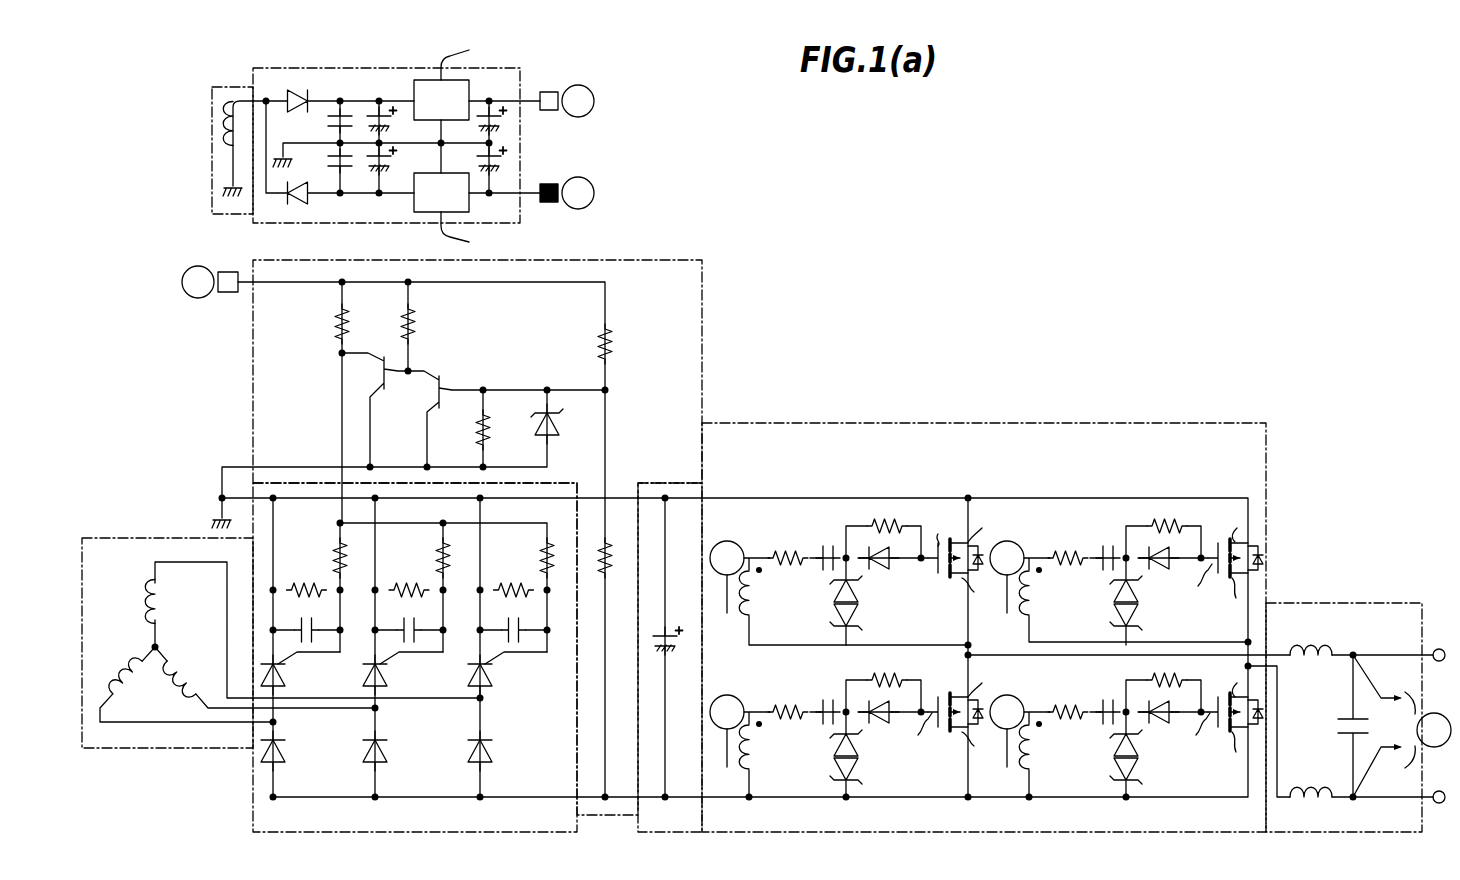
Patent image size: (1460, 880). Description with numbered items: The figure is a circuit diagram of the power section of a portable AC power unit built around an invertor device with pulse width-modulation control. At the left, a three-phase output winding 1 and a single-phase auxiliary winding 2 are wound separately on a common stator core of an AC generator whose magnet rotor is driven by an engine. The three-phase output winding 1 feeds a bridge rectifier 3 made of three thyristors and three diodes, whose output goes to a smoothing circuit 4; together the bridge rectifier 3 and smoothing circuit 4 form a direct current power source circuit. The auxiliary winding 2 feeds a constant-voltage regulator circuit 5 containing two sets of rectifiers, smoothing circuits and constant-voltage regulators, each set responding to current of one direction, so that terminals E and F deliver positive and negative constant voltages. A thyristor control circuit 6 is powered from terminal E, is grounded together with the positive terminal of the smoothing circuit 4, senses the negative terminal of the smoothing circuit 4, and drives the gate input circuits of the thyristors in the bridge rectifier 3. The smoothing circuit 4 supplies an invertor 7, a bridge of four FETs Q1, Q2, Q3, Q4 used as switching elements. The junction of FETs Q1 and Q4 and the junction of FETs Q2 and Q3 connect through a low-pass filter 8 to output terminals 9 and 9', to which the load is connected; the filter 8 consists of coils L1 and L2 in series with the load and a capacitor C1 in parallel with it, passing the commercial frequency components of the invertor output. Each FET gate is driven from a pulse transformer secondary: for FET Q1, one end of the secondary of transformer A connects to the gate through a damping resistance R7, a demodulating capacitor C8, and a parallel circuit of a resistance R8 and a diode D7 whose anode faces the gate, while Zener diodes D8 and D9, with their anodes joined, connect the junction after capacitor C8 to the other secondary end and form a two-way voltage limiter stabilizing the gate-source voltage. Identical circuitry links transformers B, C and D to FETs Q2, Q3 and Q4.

The three-phase output winding 1 is at (167, 538).
The single-phase auxiliary winding 2 is at (212, 159).
The bridge rectifier 3 is at (253, 805).
The smoothing circuit 4 is at (668, 483).
The constant-voltage regulator circuit 5 is at (576, 145).
The thyristor control circuit 6 is at (702, 367).
The invertor 7 is at (975, 423).
The low-pass filter 8 is at (1349, 673).
The output terminal 9 is at (1440, 611).
The output terminal 9' is at (1443, 829).
The damping resistance R7 is at (772, 556).
The resistance R8 is at (878, 511).
The demodulating capacitor C8 is at (828, 553).
The diode D7 is at (878, 570).
The Zener diode D8 is at (831, 599).
The Zener diode D9 is at (831, 630).
The FET Q1 is at (954, 584).
The FET Q2 is at (1224, 584).
The FET Q3 is at (1211, 739).
The FET Q4 is at (952, 739).
The coil L1 is at (1320, 667).
The coil L2 is at (1324, 790).
The capacitor C1 is at (1338, 729).